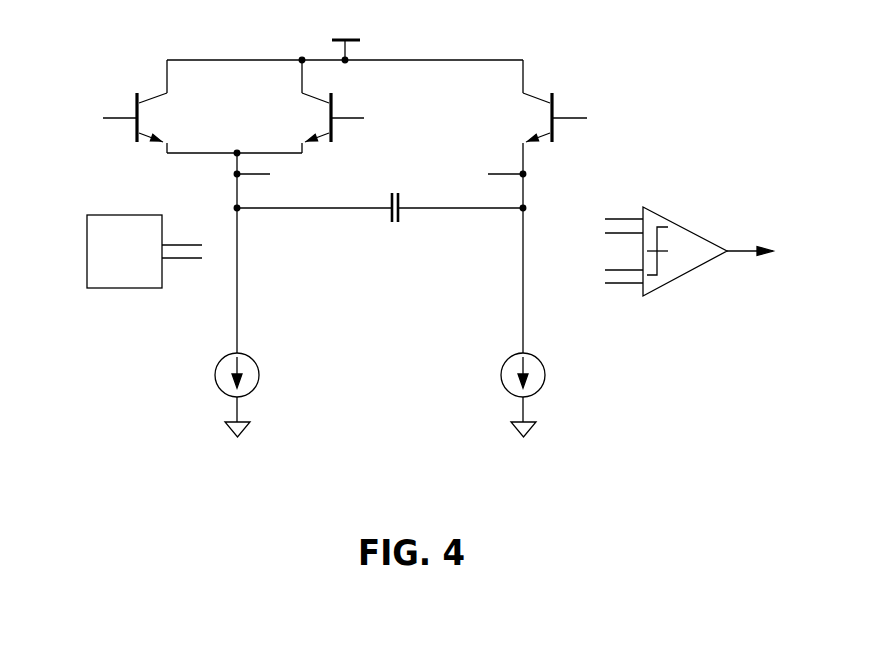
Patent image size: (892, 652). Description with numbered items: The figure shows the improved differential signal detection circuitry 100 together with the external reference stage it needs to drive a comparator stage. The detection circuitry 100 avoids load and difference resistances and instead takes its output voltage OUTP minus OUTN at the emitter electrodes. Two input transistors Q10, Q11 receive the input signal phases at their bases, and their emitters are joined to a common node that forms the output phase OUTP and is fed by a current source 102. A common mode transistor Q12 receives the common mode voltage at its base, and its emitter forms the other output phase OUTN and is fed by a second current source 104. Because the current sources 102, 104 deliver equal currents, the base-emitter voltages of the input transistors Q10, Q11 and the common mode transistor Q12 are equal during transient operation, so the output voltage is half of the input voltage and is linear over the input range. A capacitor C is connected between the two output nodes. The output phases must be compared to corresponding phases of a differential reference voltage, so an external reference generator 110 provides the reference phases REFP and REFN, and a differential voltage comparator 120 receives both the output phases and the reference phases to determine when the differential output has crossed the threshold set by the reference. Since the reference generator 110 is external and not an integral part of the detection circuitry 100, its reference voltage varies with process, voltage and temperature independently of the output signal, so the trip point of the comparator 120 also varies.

The differential signal detection circuitry 100 is at (402, 324).
The current source 102 is at (216, 376).
The current source 104 is at (545, 375).
The external reference generator 110 is at (128, 289).
The differential voltage comparator 120 is at (685, 276).
The input transistor Q10 is at (170, 106).
The input transistor Q11 is at (300, 106).
The common mode transistor Q12 is at (536, 206).
The capacitor C is at (380, 194).